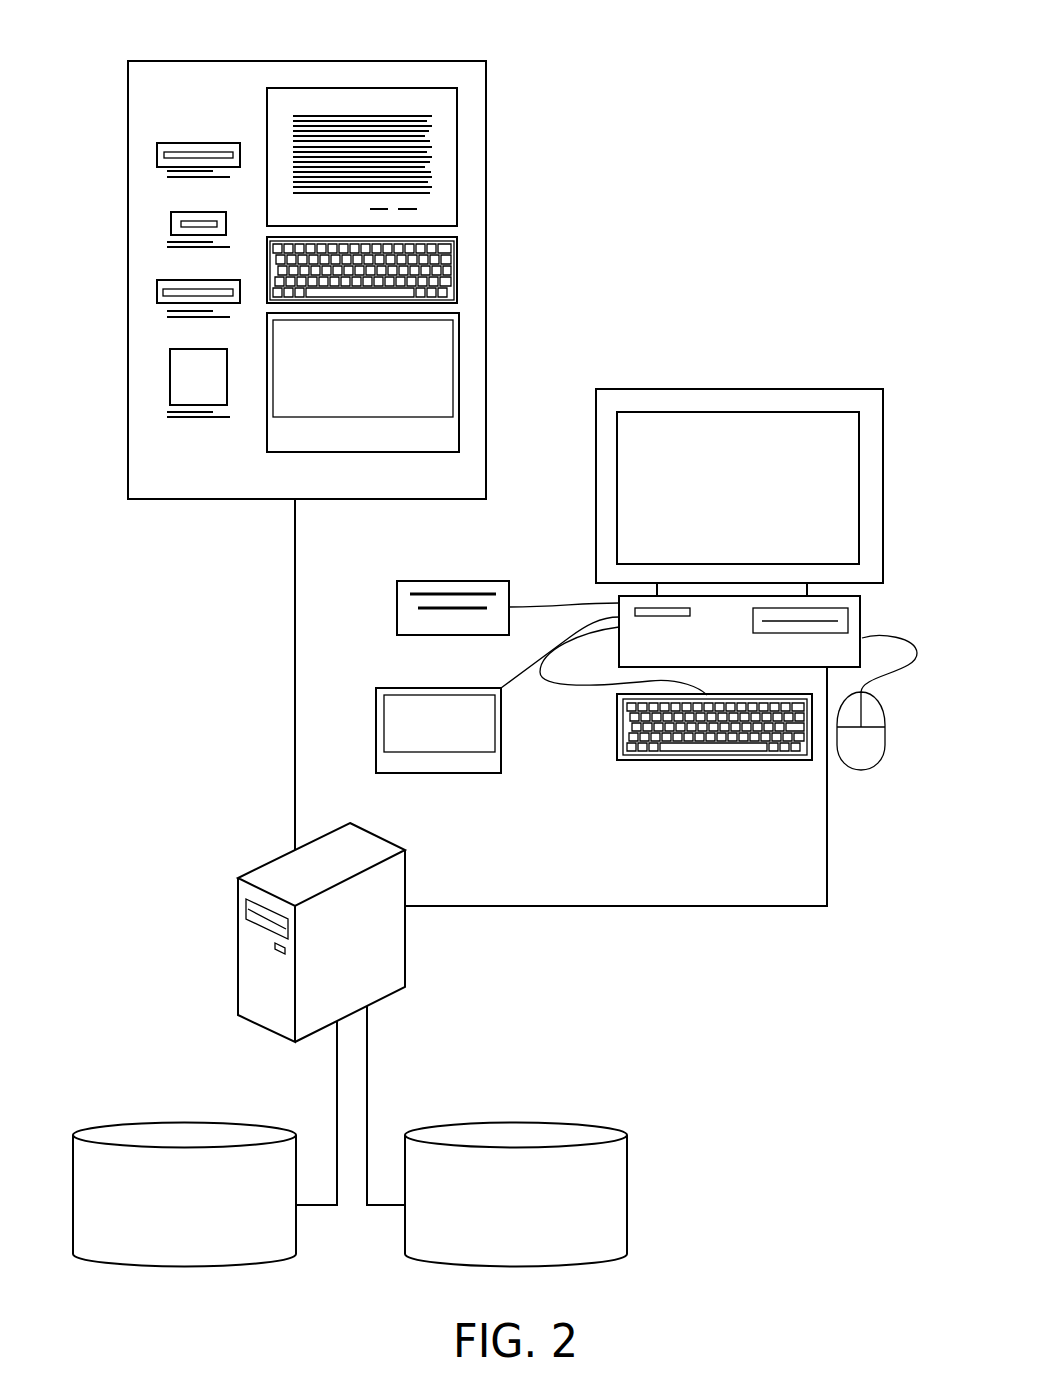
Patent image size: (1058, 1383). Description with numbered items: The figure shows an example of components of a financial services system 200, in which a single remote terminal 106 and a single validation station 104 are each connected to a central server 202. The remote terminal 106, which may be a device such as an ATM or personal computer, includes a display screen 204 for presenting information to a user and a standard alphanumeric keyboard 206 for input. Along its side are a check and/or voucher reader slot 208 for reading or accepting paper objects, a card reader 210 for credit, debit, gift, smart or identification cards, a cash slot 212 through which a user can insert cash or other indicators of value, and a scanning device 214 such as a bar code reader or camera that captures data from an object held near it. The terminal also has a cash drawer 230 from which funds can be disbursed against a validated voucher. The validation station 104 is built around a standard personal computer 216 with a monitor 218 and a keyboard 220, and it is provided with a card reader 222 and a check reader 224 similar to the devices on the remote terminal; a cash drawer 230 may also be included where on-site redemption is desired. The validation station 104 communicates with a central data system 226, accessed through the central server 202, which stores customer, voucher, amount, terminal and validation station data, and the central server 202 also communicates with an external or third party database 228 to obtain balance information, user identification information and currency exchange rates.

The remote terminal 106 is at (332, 62).
The financial services system 200 is at (771, 166).
The display screen 204 is at (460, 150).
The alphanumeric keyboard 206 is at (460, 268).
The check and/or voucher reader slot 208 is at (157, 151).
The card reader 210 is at (170, 218).
The cash slot 212 is at (157, 290).
The scanning device 214 is at (170, 375).
The cash drawer 230 is at (460, 357).
The validation station 104 is at (683, 389).
The monitor 218 is at (859, 415).
The personal computer 216 is at (862, 618).
The keyboard 220 is at (618, 735).
The card reader 222 is at (452, 594).
The check reader 224 is at (442, 608).
The central server 202 is at (321, 932).
The central data system 226 is at (184, 1195).
The external or third party database 228 is at (516, 1195).